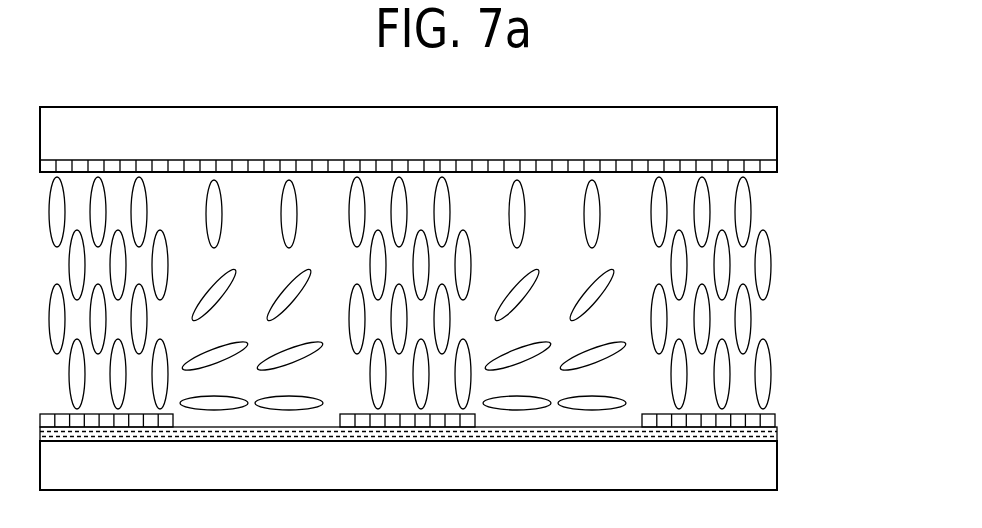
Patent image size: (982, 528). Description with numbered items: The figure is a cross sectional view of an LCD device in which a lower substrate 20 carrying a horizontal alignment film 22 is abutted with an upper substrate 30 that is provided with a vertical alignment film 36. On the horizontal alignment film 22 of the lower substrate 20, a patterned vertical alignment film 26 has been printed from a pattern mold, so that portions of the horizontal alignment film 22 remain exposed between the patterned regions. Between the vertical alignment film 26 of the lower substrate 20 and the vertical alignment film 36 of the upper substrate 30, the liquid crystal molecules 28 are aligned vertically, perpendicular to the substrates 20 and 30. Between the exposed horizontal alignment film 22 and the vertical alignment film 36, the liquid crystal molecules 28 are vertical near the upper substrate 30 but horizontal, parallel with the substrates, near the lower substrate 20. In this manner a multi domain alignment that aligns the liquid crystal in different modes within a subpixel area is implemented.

The lower substrate 20 is at (775, 463).
The horizontal alignment film 22 is at (777, 437).
The vertical alignment film 26 is at (775, 423).
The liquid crystal molecules 28 is at (766, 268).
The upper substrate 30 is at (777, 134).
The vertical alignment film 36 is at (777, 164).